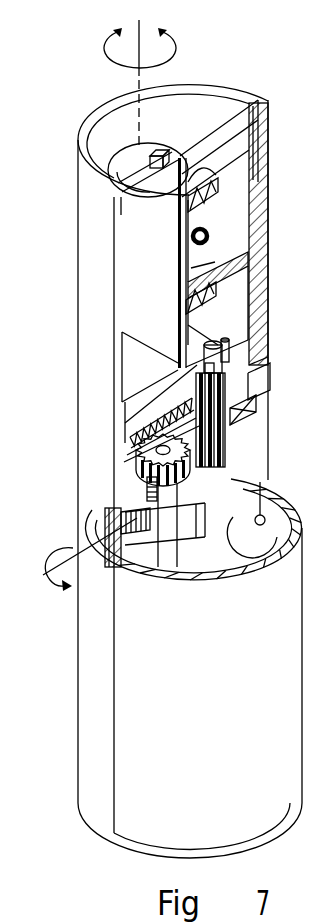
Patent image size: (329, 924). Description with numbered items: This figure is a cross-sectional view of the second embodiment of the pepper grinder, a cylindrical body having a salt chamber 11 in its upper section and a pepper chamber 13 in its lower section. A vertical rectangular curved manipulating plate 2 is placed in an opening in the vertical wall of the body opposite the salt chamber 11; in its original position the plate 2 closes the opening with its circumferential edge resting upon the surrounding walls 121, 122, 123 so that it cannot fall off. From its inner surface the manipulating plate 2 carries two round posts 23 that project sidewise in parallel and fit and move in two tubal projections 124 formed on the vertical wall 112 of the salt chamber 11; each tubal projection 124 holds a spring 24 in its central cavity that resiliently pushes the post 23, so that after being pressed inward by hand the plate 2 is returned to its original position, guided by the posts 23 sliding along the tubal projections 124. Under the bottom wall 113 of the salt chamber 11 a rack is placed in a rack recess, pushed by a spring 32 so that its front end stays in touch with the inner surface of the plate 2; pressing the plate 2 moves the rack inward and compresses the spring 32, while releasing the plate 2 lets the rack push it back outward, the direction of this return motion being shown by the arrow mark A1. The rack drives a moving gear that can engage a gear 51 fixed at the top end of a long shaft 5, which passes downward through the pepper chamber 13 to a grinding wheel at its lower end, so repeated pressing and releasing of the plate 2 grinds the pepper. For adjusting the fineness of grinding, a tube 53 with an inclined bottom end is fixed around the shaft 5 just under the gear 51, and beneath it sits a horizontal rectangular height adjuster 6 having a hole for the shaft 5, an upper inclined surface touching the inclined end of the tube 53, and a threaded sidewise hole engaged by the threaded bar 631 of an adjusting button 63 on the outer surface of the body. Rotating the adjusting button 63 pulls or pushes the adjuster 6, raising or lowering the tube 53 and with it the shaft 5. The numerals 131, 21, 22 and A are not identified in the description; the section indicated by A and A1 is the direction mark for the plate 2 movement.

The salt chamber 11 is at (132, 319).
The vertical wall of the salt chamber 112 is at (185, 248).
The bottom wall of the salt chamber 113 is at (142, 397).
The pepper chamber 13 is at (218, 530).
The recess in lower housing 131 is at (257, 541).
The manipulating plate 2 is at (287, 234).
The plate arm 21 is at (253, 147).
The plate top strip 22 is at (253, 133).
The upper projecting-down wall 121 is at (257, 163).
The wall surrounding the opening 122 is at (213, 150).
The wall surrounding the opening 123 is at (250, 407).
The tubal projection 124 is at (200, 192).
The round post 23 is at (216, 199).
The spring 24 is at (206, 239).
The spring 32 is at (126, 428).
The long shaft 5 is at (171, 554).
The gear 51 is at (147, 451).
The tube 53 is at (148, 489).
The height adjuster 6 is at (143, 497).
The adjusting button 63 is at (100, 528).
The threaded bar 631 is at (110, 566).
The section line A is at (310, 262).
The arrow mark A1 is at (305, 221).